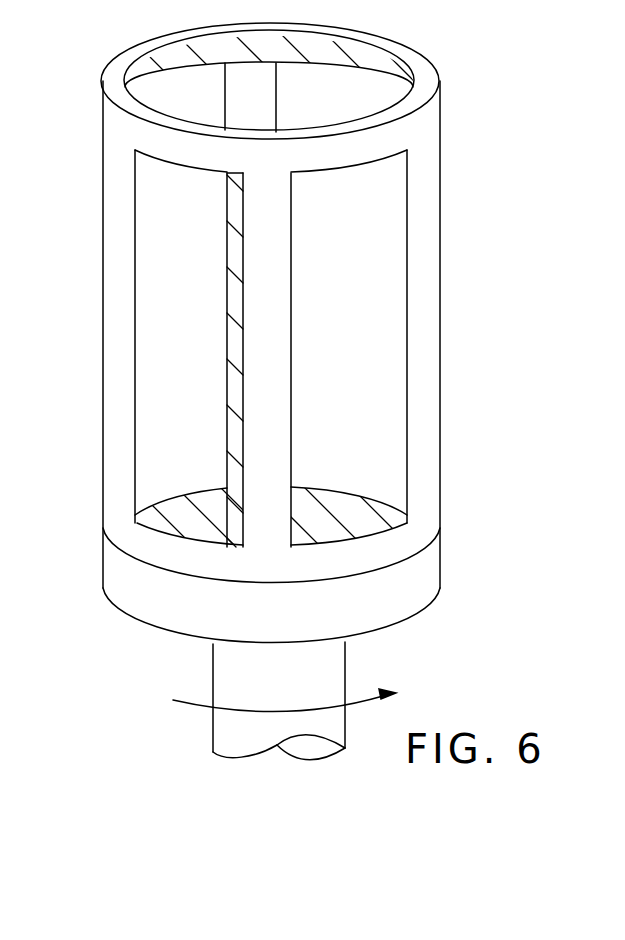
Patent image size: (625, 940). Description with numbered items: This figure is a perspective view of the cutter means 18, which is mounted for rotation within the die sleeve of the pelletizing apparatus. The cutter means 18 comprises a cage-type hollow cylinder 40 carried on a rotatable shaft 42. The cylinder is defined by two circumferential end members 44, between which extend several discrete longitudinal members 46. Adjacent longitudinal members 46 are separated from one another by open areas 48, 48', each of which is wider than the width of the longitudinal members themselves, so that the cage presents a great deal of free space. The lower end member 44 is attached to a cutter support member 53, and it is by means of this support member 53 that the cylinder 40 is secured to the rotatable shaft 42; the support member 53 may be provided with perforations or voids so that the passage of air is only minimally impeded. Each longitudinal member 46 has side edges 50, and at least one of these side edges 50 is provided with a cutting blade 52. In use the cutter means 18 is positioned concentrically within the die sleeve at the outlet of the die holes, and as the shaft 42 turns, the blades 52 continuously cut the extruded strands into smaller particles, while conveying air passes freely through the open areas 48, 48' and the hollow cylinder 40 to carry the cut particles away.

The cutter means 18 is at (283, 390).
The cage-type hollow cylinder 40 is at (425, 188).
The rotatable shaft 42 is at (332, 670).
The circumferential end members 44 is at (417, 123).
The longitudinal members 46 is at (115, 297).
The open area 48 is at (385, 347).
The open area 48' is at (154, 347).
The side edges 50 is at (237, 283).
The cutting blade 52 is at (168, 473).
The cutter support member 53 is at (430, 590).